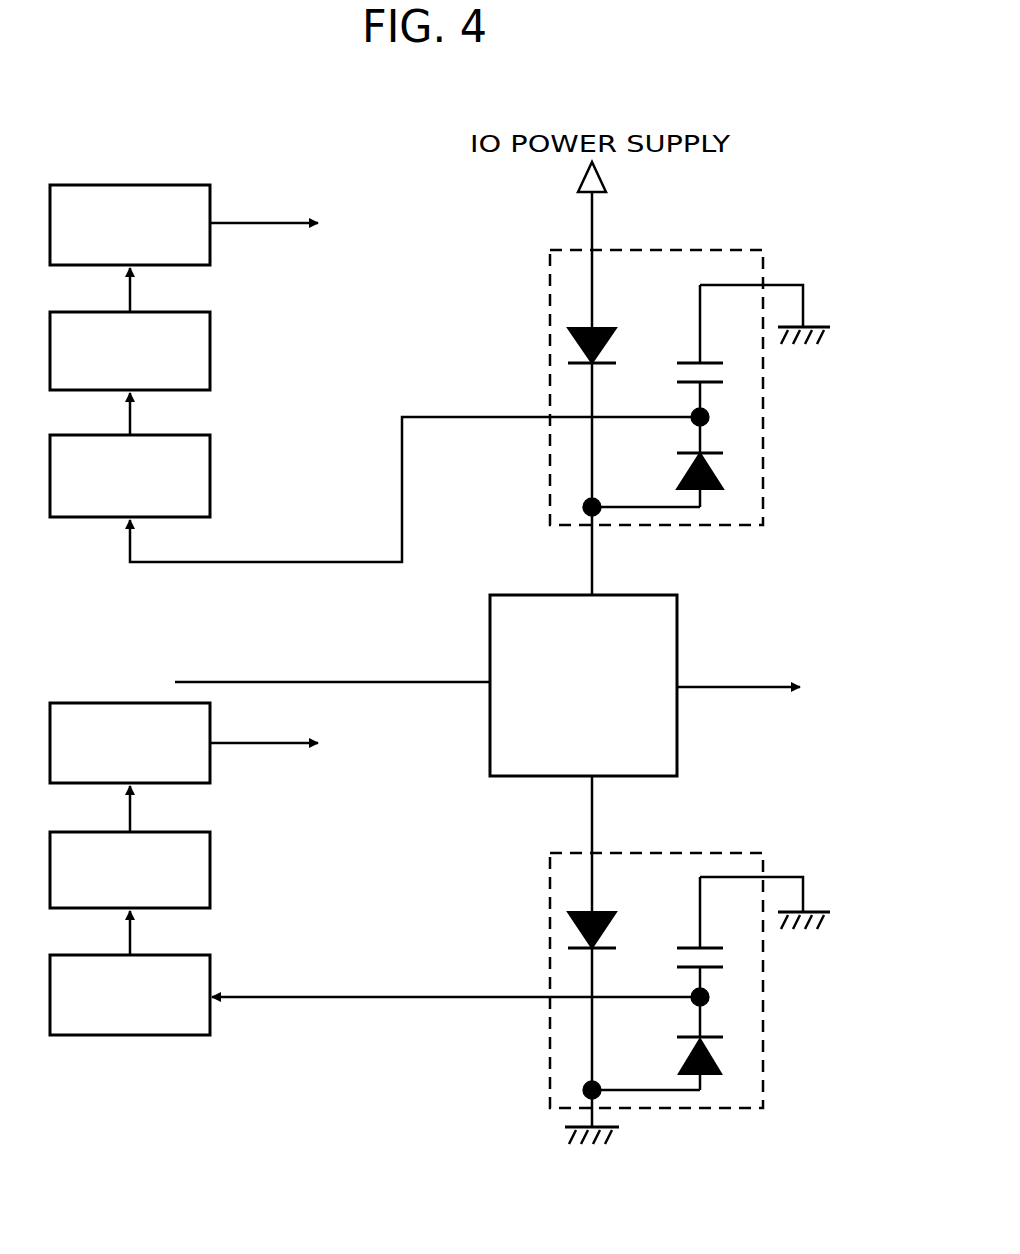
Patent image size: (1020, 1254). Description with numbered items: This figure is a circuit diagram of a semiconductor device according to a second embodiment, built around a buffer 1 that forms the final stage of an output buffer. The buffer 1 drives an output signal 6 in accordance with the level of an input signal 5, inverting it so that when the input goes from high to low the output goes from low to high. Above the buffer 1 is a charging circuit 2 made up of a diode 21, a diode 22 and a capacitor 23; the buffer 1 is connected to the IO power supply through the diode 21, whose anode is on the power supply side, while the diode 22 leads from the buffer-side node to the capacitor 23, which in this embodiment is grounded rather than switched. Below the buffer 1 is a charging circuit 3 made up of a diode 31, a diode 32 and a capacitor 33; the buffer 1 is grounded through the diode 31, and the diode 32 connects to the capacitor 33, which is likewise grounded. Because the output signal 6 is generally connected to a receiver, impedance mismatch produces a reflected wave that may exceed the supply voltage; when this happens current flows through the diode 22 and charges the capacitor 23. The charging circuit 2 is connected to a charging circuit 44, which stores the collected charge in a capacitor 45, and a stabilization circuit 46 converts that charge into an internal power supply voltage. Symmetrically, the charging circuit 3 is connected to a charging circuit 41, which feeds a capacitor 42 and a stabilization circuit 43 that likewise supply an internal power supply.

The buffer 1 is at (677, 637).
The charging circuit 2 is at (654, 350).
The charging circuit 3 is at (650, 1018).
The input signal 5 is at (197, 681).
The output signal 6 is at (772, 683).
The diode 21 is at (578, 345).
The diode 22 is at (712, 460).
The capacitor 23 is at (712, 383).
The diode 31 is at (578, 928).
The diode 32 is at (712, 1043).
The capacitor 33 is at (712, 968).
The charging circuit 41 is at (210, 976).
The capacitor 42 is at (210, 862).
The stabilization circuit 43 is at (210, 758).
The charging circuit 44 is at (210, 470).
The capacitor 45 is at (210, 345).
The stabilization circuit 46 is at (210, 236).